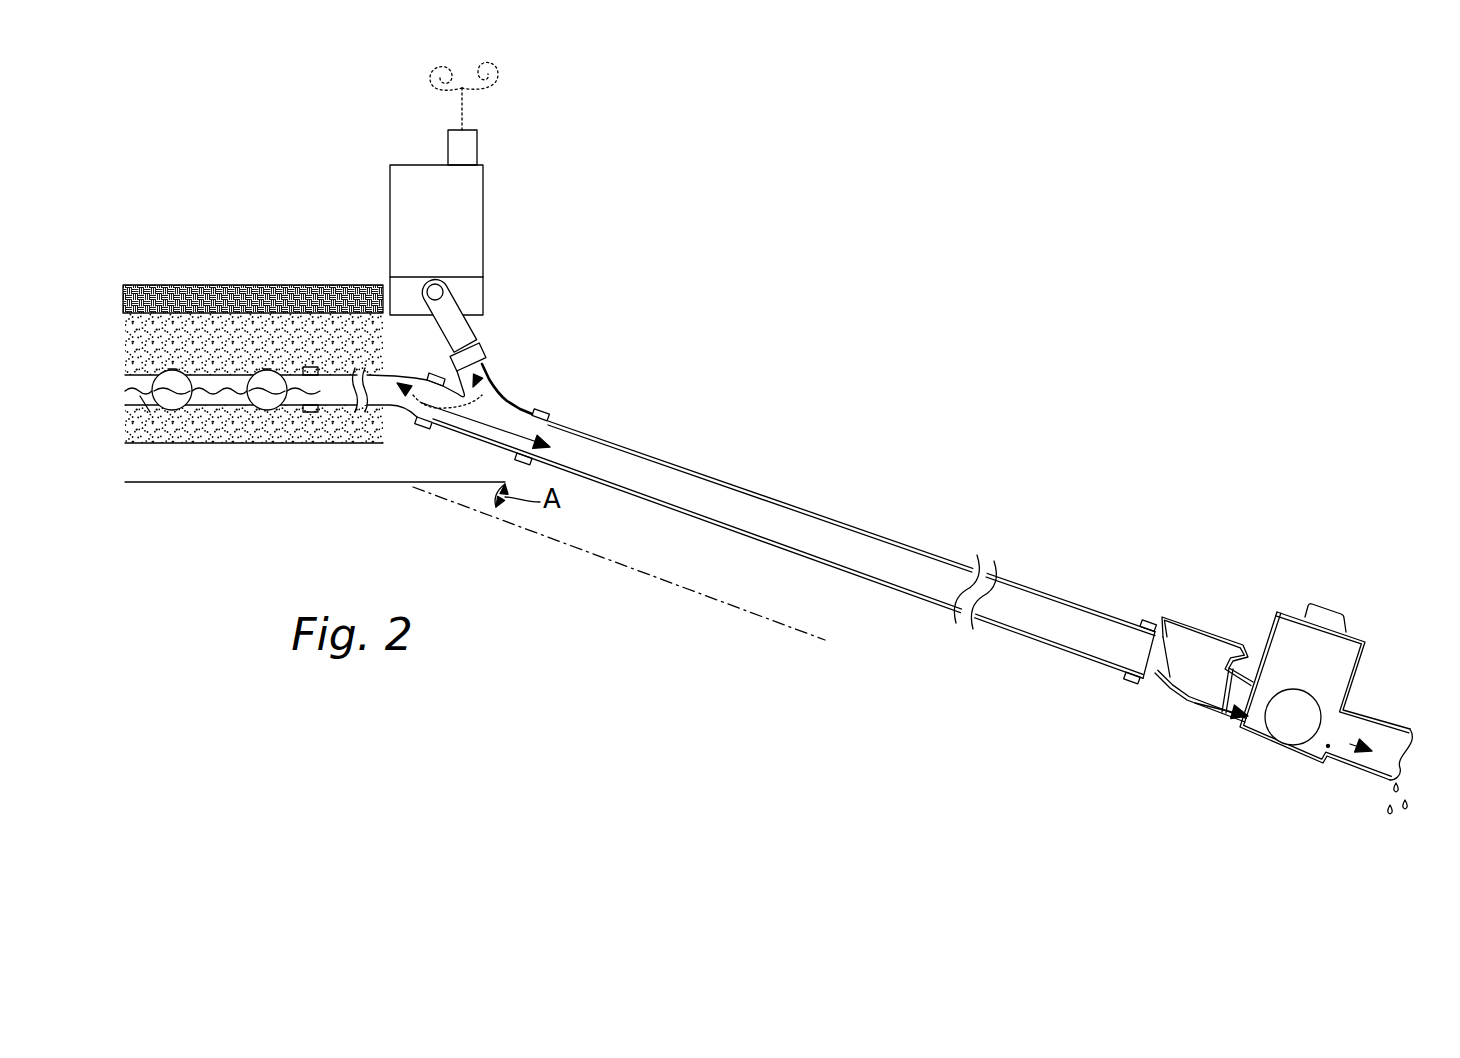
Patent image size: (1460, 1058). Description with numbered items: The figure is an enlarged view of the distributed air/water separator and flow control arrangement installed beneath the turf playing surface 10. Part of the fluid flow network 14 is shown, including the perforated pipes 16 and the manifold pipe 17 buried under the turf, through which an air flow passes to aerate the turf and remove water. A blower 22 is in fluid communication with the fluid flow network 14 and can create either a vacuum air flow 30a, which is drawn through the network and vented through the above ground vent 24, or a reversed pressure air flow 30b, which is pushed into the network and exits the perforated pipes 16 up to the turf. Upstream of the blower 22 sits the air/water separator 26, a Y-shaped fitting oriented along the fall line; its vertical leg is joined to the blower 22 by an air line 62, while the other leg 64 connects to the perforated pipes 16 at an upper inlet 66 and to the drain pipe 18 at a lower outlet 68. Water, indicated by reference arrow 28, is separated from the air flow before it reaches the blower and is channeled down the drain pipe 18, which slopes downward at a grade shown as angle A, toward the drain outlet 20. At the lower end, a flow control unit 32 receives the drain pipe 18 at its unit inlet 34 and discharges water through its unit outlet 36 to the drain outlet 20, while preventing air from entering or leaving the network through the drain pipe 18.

The turf playing surface 10 is at (297, 284).
The fluid flow network 14 is at (218, 370).
The perforated pipes 16 is at (165, 370).
The manifold pipe 17 is at (143, 400).
The drain pipe 18 is at (888, 545).
The drain outlet 20 is at (1403, 767).
The blower 22 is at (485, 217).
The above ground vent 24 is at (478, 145).
The air/water separator 26 is at (498, 386).
The water 28 is at (540, 440).
The vacuum air flow 30a is at (480, 378).
The pressure air flow 30b is at (405, 395).
The flow control unit 32 is at (1281, 695).
The unit inlet 34 is at (1160, 620).
The unit outlet 36 is at (1353, 687).
The air line 62 is at (470, 330).
The leg 64 is at (473, 437).
The upper inlet 66 is at (423, 430).
The lower outlet 68 is at (523, 463).